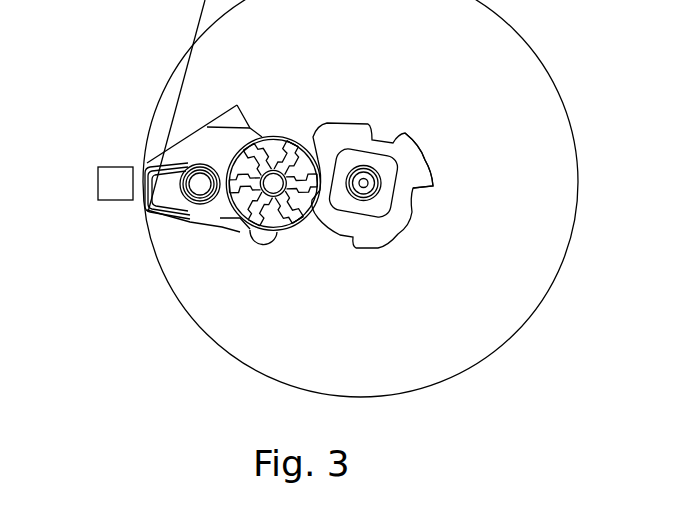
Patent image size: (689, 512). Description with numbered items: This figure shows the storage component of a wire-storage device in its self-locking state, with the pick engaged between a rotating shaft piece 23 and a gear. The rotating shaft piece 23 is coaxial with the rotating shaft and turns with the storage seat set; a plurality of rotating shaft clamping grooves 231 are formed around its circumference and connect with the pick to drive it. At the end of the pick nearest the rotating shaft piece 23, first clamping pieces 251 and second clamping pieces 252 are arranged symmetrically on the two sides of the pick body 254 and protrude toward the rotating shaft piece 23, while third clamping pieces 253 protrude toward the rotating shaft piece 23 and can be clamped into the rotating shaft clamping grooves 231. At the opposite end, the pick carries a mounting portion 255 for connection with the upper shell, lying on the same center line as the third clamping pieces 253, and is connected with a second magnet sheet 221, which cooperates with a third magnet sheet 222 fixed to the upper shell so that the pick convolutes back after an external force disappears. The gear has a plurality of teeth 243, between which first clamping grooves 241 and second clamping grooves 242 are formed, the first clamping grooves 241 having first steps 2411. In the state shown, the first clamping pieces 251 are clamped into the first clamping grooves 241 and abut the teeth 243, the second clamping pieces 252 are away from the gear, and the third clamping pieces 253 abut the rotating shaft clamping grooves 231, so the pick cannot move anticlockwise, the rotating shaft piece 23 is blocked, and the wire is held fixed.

The rotating shaft piece 23 is at (385, 235).
The rotating shaft clamping grooves 231 is at (415, 205).
The first clamping grooves 241 is at (250, 145).
The second clamping grooves 242 is at (278, 147).
The first steps 2411 is at (280, 228).
The teeth 243 is at (220, 218).
The first clamping pieces 251 is at (262, 245).
The second clamping pieces 252 is at (237, 117).
The third clamping pieces 253 is at (309, 145).
The pick body 254 is at (207, 147).
The mounting portion 255 is at (196, 178).
The second magnet sheet 221 is at (168, 197).
The third magnet sheet 222 is at (108, 192).